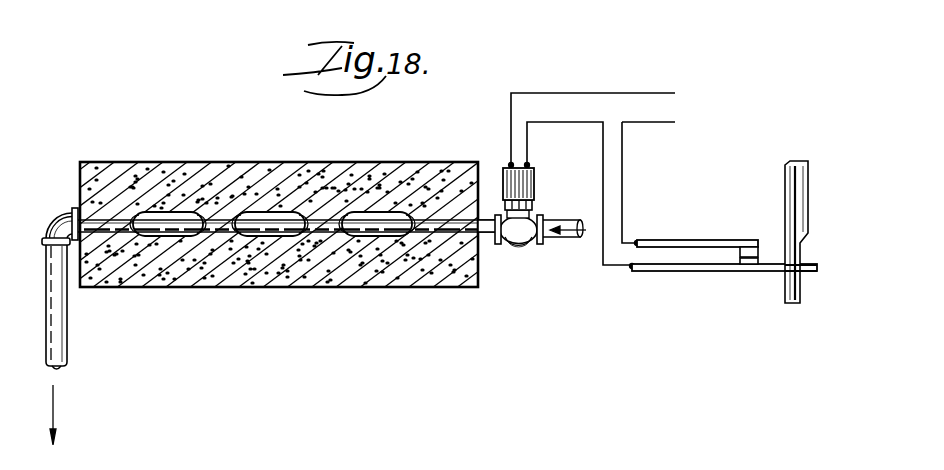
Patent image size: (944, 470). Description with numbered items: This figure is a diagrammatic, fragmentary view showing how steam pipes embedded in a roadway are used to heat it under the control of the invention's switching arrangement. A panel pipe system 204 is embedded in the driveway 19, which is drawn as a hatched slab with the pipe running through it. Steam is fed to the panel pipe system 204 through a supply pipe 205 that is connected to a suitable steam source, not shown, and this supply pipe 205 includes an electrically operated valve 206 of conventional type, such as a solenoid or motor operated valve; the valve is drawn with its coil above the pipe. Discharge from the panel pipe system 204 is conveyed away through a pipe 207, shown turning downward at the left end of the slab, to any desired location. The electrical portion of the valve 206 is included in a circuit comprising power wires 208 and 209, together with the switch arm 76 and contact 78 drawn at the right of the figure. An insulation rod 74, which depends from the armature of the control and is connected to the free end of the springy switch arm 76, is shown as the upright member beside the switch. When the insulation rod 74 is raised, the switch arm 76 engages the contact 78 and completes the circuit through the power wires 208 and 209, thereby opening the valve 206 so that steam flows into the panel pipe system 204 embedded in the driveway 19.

The driveway 19 is at (136, 162).
The panel pipe system 204 is at (263, 219).
The supply pipe 205 is at (559, 242).
The electrically operated valve 206 is at (531, 183).
The pipe 207 is at (63, 326).
The power wire 208 is at (651, 87).
The power wire 209 is at (656, 124).
The insulation rod 74 is at (785, 176).
The switch arm 76 is at (712, 272).
The contact 78 is at (760, 250).